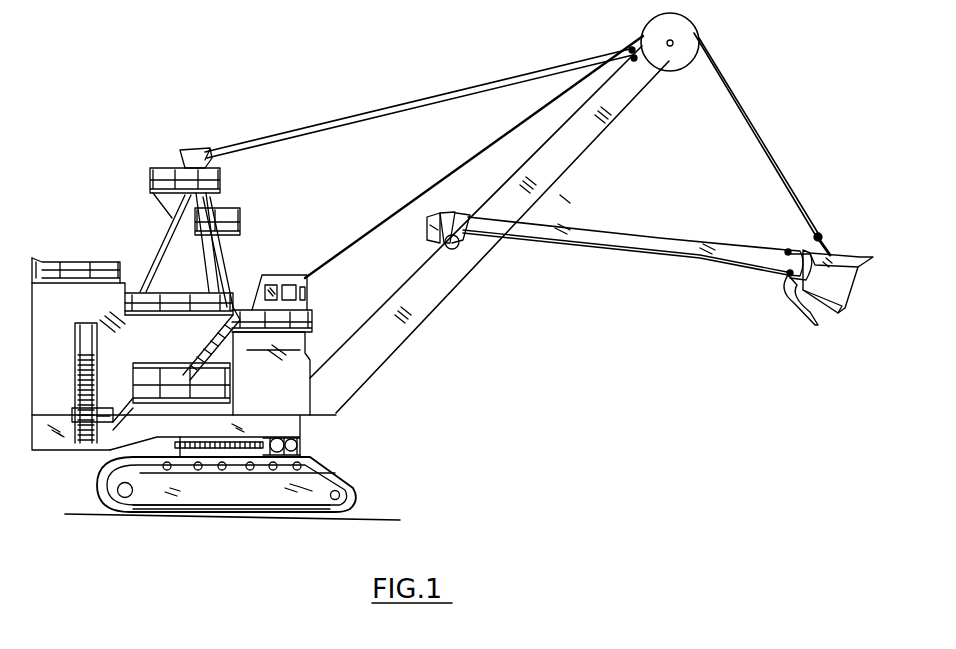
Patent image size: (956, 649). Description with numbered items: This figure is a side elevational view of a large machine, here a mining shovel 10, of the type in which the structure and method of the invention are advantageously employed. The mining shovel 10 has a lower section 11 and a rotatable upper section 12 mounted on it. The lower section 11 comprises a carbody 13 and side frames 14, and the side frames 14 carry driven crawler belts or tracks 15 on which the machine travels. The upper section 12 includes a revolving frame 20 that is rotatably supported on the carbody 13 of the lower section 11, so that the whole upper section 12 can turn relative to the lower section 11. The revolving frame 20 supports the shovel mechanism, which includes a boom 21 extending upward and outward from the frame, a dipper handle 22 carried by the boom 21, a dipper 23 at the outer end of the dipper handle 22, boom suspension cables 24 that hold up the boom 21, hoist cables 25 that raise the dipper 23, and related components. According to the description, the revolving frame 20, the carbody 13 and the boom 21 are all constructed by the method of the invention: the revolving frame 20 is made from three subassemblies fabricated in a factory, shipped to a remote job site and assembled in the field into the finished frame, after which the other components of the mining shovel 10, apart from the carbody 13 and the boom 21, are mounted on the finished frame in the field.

The mining shovel 10 is at (350, 104).
The lower section 11 is at (376, 491).
The upper section 12 is at (350, 385).
The carbody 13 is at (295, 451).
The side frames 14 is at (247, 500).
The crawler belts or tracks 15 is at (100, 490).
The revolving frame 20 is at (300, 429).
The boom 21 is at (612, 123).
The dipper handle 22 is at (693, 263).
The dipper 23 is at (848, 290).
The boom suspension cables 24 is at (460, 92).
The hoist cables 25 is at (780, 148).